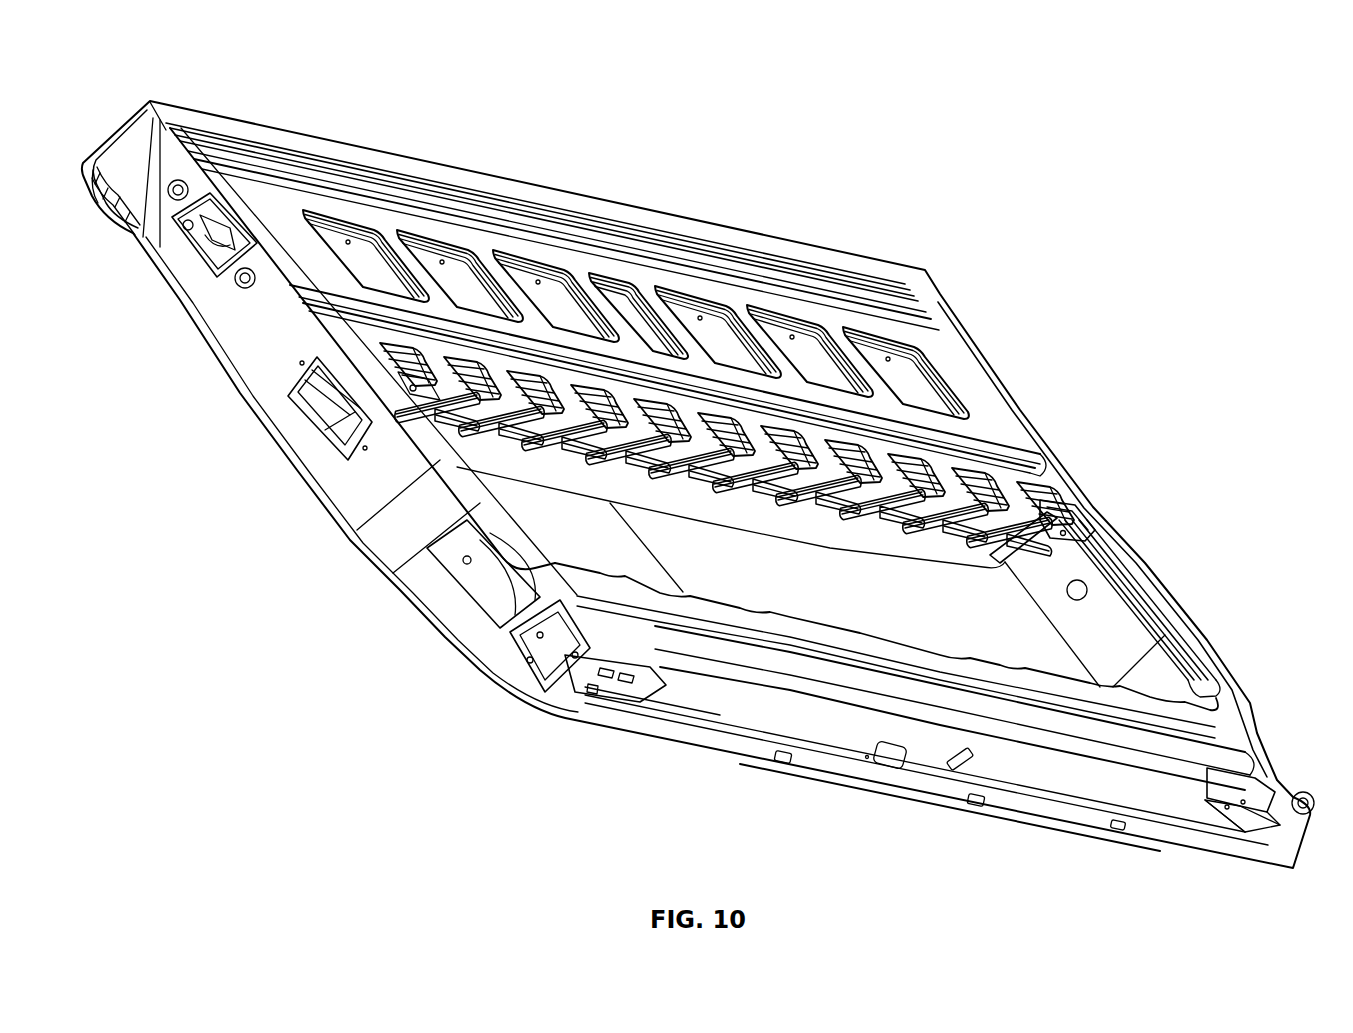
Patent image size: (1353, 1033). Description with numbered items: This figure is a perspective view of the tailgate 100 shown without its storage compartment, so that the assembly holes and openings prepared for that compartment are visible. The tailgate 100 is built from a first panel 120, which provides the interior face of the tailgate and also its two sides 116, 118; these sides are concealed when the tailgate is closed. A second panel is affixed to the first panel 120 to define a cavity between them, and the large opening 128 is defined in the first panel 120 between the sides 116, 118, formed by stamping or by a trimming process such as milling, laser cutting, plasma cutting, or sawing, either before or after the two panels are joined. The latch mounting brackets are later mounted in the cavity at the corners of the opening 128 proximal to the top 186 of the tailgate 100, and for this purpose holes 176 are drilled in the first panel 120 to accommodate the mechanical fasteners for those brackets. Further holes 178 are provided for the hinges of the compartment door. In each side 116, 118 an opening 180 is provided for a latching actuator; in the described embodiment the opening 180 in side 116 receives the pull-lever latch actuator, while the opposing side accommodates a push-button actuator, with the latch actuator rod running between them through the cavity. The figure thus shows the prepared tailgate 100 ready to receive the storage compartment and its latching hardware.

The tailgate 100 is at (1012, 400).
The side 116 is at (245, 349).
The side 118 is at (1130, 631).
The first panel 120 is at (1235, 712).
The opening 128 is at (1093, 530).
The holes 176 is at (412, 387).
The holes for the hinges 178 is at (885, 717).
The opening for latch actuator 180 is at (325, 430).
The top 186 is at (143, 103).